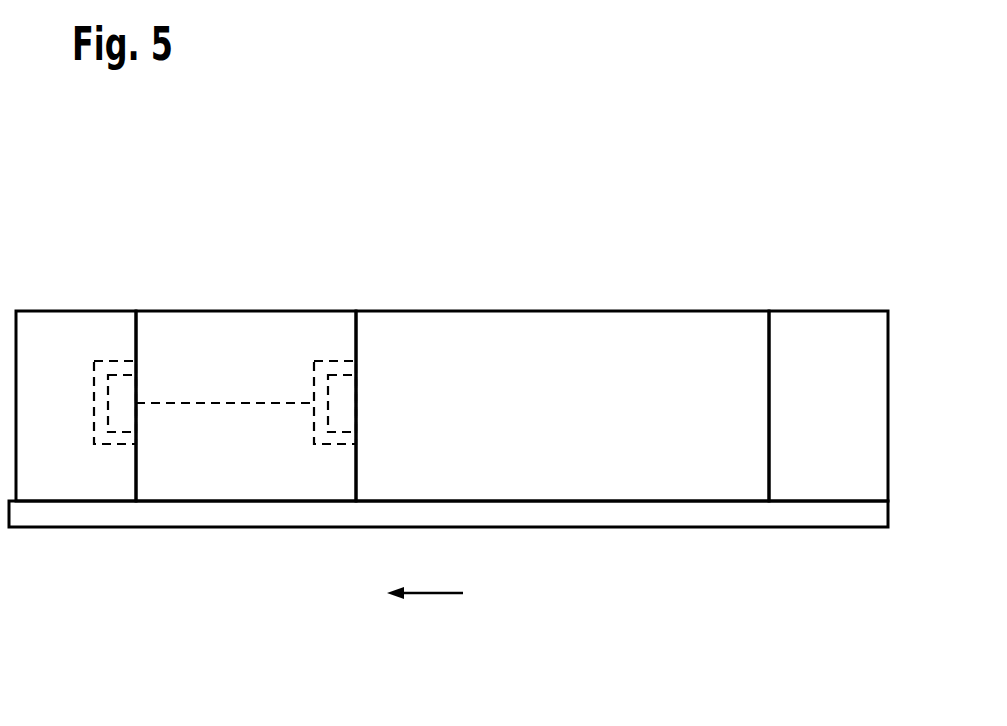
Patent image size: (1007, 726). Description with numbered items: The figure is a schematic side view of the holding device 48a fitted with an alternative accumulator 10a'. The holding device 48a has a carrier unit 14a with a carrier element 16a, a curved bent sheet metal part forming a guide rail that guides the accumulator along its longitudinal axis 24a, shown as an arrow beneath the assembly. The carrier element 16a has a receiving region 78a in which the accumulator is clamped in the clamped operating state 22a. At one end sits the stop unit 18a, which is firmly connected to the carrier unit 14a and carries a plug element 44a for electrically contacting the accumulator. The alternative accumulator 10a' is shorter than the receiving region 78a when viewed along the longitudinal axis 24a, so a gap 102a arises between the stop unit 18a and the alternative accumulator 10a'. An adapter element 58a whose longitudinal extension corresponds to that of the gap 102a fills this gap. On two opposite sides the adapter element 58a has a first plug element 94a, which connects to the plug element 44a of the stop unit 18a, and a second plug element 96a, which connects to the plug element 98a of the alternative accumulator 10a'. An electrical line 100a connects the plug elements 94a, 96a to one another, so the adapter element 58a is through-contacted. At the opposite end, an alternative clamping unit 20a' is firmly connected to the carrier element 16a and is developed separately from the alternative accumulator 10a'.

The stop unit 18a is at (46, 327).
The plug element 44a is at (112, 355).
The first plug element 94a is at (108, 445).
The adapter element 58a is at (180, 327).
The gap 102a is at (239, 348).
The electrical line 100a is at (209, 404).
The second plug element 96a is at (330, 355).
The plug element 98a is at (326, 445).
The alternative accumulator 10a' is at (562, 367).
The receiving region 78a is at (423, 385).
The alternative clamping unit 20a' is at (828, 368).
The clamped operating state 22a is at (606, 247).
The holding device 48a is at (673, 200).
The carrier unit 14a is at (537, 513).
The carrier element 16a is at (622, 513).
The longitudinal axis 24a is at (435, 595).